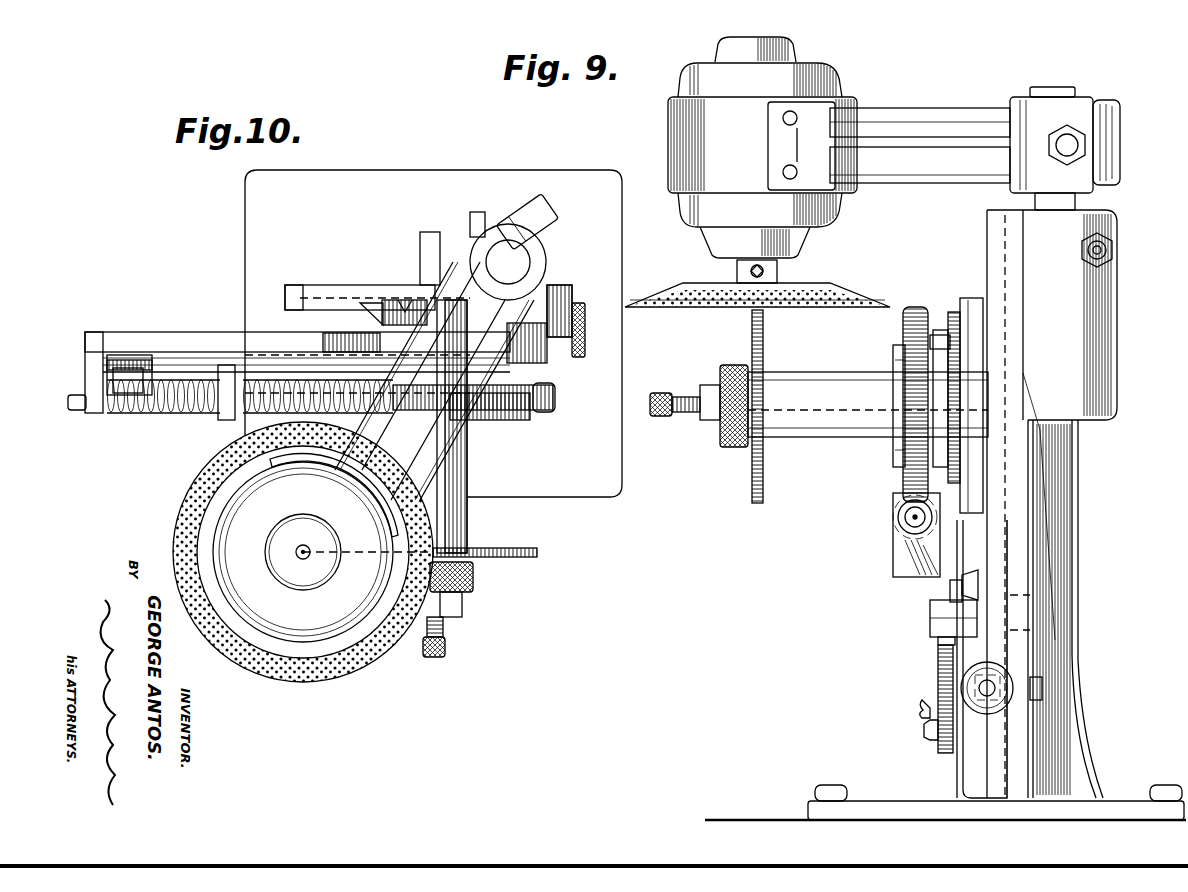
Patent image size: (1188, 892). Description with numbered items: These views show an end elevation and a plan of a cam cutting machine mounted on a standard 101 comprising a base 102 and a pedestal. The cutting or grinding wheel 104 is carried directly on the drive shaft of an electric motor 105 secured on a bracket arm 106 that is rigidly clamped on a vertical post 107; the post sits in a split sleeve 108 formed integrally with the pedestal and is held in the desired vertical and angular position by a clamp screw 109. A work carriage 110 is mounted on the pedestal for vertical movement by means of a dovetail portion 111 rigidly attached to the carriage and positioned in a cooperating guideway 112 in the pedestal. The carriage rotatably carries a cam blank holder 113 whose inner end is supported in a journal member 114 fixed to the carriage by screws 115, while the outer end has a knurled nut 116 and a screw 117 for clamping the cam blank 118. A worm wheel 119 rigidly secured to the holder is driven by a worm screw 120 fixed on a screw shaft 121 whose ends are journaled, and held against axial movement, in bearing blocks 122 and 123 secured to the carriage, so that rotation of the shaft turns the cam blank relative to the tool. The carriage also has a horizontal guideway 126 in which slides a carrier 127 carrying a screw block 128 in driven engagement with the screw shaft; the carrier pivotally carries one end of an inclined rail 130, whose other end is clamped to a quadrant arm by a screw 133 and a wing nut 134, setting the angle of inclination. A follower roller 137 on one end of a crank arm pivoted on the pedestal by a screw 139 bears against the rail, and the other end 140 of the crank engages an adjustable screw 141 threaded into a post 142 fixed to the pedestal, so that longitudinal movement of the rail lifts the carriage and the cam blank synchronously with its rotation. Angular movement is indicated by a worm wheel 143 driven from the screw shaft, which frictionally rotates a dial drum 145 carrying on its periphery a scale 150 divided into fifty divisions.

In FIG. 9, the standard 101 is at (1005, 780).
In FIG. 10, the standard 101 is at (318, 295).
In FIG. 9, the base 102 is at (898, 786).
In FIG. 10, the base 102 is at (578, 485).
In FIG. 9, the cutting disk or grinding wheel 104 is at (835, 290).
In FIG. 10, the cutting disk or grinding wheel 104 is at (335, 675).
In FIG. 9, the electric motor 105 is at (832, 88).
In FIG. 10, the electric motor 105 is at (283, 635).
In FIG. 9, the bracket arm 106 is at (925, 108).
In FIG. 10, the bracket arm 106 is at (440, 445).
In FIG. 9, the vertical post 107 is at (1055, 95).
In FIG. 10, the vertical post 107 is at (520, 268).
In FIG. 9, the split sleeve 108 is at (1080, 345).
In FIG. 9, the clamp screw 109 is at (1110, 250).
In FIG. 9, the work carriage 110 is at (968, 298).
In FIG. 10, the work carriage 110 is at (181, 333).
In FIG. 10, the dovetail portion 111 is at (385, 310).
In FIG. 10, the guideway 112 is at (404, 300).
In FIG. 9, the cam blank holder 113 is at (820, 437).
In FIG. 10, the cam blank holder 113 is at (467, 516).
In FIG. 9, the journal member 114 is at (946, 318).
In FIG. 10, the journal member 114 is at (578, 360).
In FIG. 9, the screws 115 is at (935, 325).
In FIG. 10, the screws 115 is at (500, 368).
In FIG. 9, the knurled nut 116 is at (726, 450).
In FIG. 10, the knurled nut 116 is at (475, 580).
In FIG. 9, the screw 117 is at (666, 413).
In FIG. 10, the screw 117 is at (447, 648).
In FIG. 9, the cam blank 118 is at (755, 502).
In FIG. 10, the cam blank 118 is at (505, 554).
In FIG. 9, the worm wheel 119 is at (905, 478).
In FIG. 10, the worm wheel 119 is at (508, 415).
In FIG. 9, the worm screw 120 is at (898, 514).
In FIG. 9, the screw shaft 121 is at (910, 527).
In FIG. 10, the screw shaft 121 is at (195, 415).
In FIG. 9, the bearing block 122 is at (904, 523).
In FIG. 10, the bearing block 123 is at (91, 332).
In FIG. 9, the guideway 126 is at (955, 606).
In FIG. 9, the carrier 127 is at (950, 582).
In FIG. 9, the screw block 128 is at (895, 566).
In FIG. 10, the screw block 128 is at (230, 420).
In FIG. 9, the inclined rail 130 is at (940, 665).
In FIG. 9, the screw 133 is at (930, 710).
In FIG. 9, the wing nut 134 is at (930, 732).
In FIG. 9, the roller 137 is at (945, 632).
In FIG. 9, the screw 139 is at (1015, 600).
In FIG. 9, the other end of crank 140 is at (990, 650).
In FIG. 9, the adjustable screw 141 is at (985, 712).
In FIG. 10, the adjustable screw 141 is at (582, 355).
In FIG. 9, the post 142 is at (1050, 715).
In FIG. 10, the worm wheel 143 is at (128, 413).
In FIG. 10, the dial drum 145 is at (113, 372).
In FIG. 10, the scale 150 is at (121, 355).